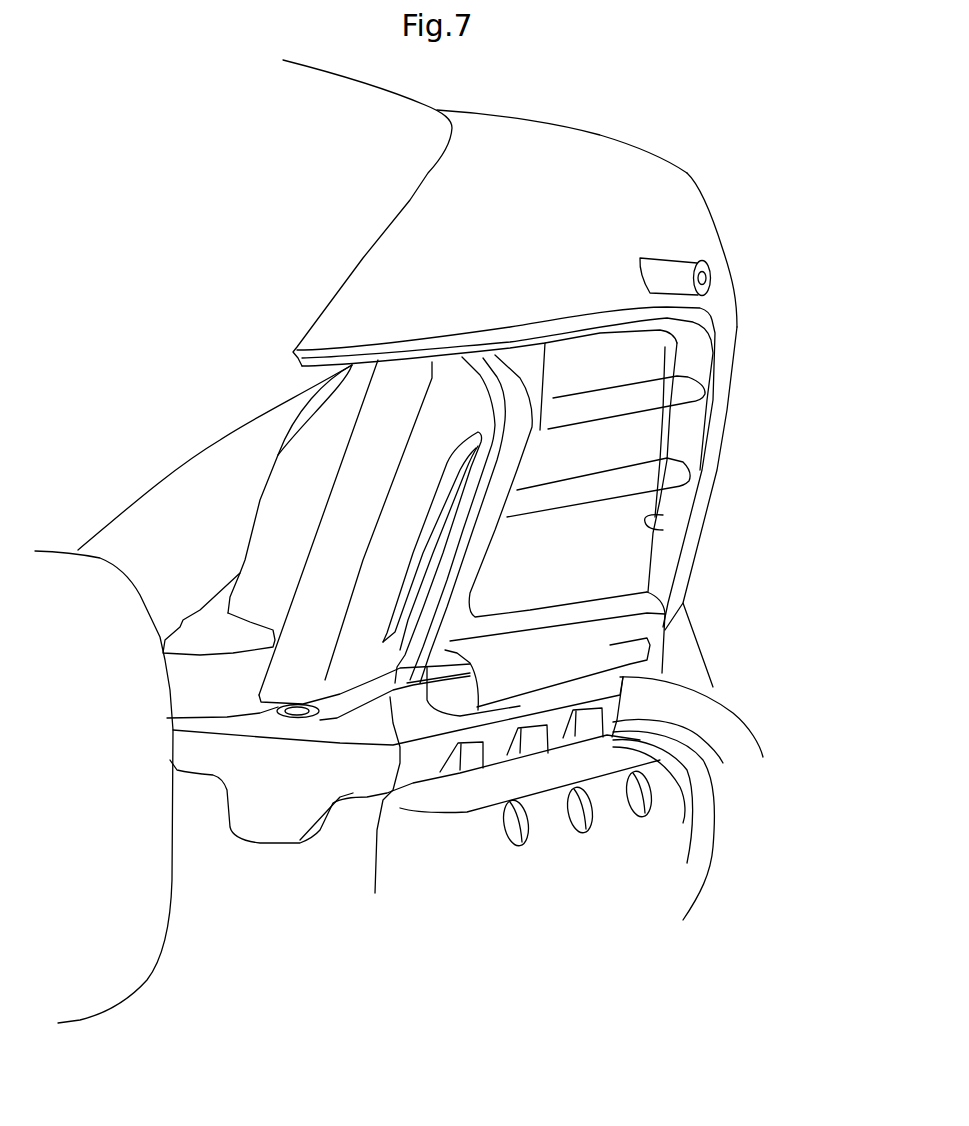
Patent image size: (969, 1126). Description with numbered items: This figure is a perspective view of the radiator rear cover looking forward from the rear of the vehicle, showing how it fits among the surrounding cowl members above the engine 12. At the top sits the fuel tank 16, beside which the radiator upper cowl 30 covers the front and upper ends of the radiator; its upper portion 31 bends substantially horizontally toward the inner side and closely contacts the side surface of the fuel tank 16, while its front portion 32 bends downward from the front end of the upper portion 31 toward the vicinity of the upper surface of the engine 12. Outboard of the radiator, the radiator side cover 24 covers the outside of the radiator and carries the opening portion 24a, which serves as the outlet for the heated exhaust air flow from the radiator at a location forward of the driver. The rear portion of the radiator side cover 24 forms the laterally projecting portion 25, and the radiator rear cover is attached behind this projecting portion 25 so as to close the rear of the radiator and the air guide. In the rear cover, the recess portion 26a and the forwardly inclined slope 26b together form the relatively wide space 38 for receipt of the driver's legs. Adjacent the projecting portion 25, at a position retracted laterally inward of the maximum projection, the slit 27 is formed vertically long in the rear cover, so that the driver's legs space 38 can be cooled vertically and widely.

The liquid cooling horizontally opposed engine 12 is at (552, 743).
The fuel tank 16 is at (380, 97).
The radiator side cover 24 is at (690, 378).
The opening portion 24a is at (650, 527).
The projecting portion 25 is at (478, 710).
The recess portion 26a is at (413, 497).
The slope 26b is at (305, 684).
The slit 27 is at (410, 597).
The radiator upper cowl 30 is at (665, 162).
The upper portion 31 is at (548, 141).
The front portion 32 is at (727, 410).
The driver's legs space 38 is at (177, 477).